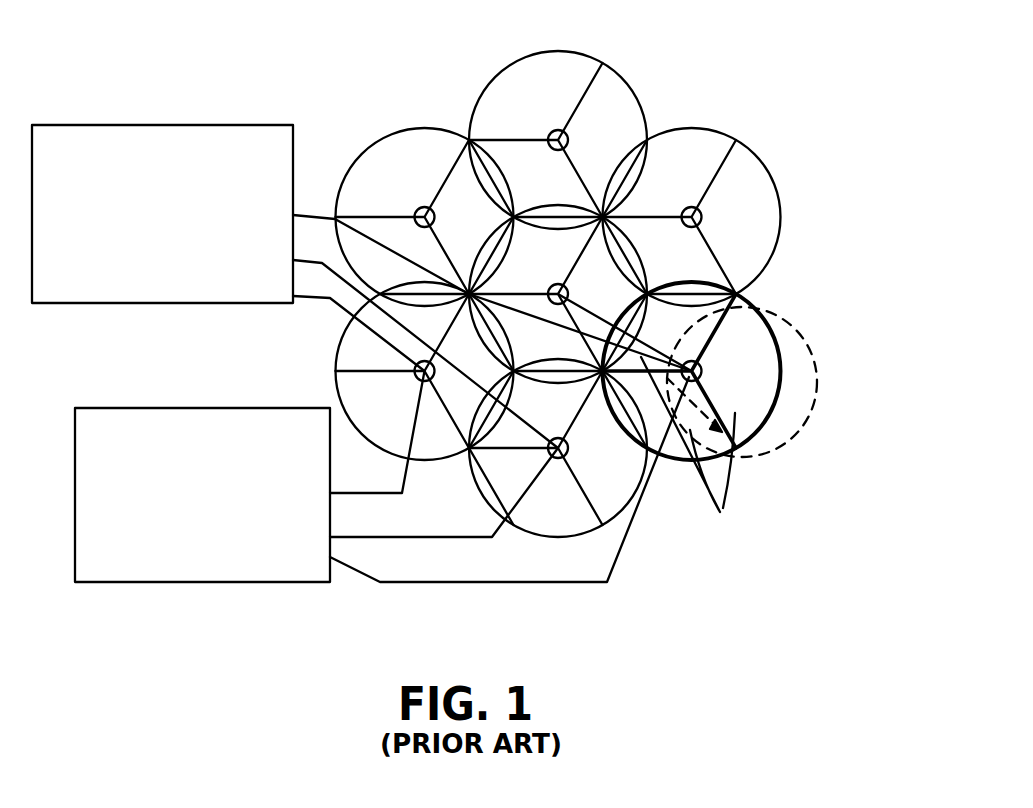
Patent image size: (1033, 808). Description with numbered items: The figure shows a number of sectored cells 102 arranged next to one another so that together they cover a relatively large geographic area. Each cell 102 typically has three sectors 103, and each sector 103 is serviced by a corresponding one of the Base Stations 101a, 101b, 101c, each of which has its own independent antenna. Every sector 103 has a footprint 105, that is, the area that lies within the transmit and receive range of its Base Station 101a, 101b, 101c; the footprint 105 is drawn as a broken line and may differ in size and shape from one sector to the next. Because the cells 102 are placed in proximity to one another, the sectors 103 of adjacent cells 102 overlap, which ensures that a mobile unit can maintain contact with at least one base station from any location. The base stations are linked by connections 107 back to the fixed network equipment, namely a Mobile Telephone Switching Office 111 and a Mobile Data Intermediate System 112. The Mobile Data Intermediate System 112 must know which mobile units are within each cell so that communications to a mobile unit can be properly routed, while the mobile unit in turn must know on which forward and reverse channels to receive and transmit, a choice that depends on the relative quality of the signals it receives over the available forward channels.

The base station 101a is at (700, 373).
The base station 101b is at (750, 313).
The base station 101c is at (566, 138).
The sectored cell 102 is at (793, 183).
The sector 103 is at (712, 446).
The footprint 105 is at (773, 453).
The data links between base stations and intermediate system 107 is at (362, 494).
The mobile telephone switching office 111 is at (230, 290).
The mobile data intermediate system 112 is at (280, 568).